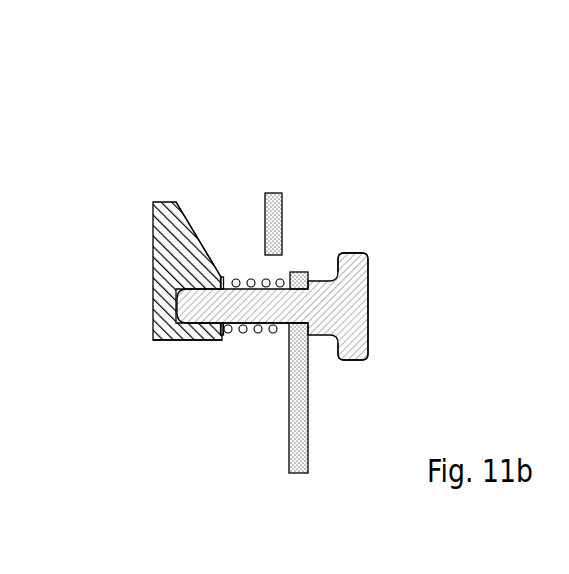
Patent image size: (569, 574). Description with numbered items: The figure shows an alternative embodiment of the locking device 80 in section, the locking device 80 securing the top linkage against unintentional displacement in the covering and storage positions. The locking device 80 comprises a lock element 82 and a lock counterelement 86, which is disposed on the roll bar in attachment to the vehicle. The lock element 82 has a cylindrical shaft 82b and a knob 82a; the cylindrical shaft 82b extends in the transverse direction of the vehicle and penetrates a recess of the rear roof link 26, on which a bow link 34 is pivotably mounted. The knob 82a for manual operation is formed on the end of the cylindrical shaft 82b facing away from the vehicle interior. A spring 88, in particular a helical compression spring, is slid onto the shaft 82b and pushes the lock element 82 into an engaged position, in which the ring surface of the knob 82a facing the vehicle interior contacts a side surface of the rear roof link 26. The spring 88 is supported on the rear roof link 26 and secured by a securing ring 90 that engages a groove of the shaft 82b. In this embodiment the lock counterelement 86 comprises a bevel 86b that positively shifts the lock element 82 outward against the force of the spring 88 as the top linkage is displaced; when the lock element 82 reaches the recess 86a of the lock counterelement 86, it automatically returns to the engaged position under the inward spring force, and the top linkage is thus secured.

The locking device 80 is at (276, 78).
The lock counterelement 86 is at (165, 238).
The recess 86a is at (190, 328).
The bevel 86b is at (202, 230).
The bow link 34 is at (281, 230).
The spring 88 is at (263, 283).
The lock element 82 is at (370, 258).
The knob 82a is at (368, 352).
The cylindrical shaft 82b is at (251, 323).
The rear roof link 26 is at (300, 417).
The securing ring 90 is at (223, 335).